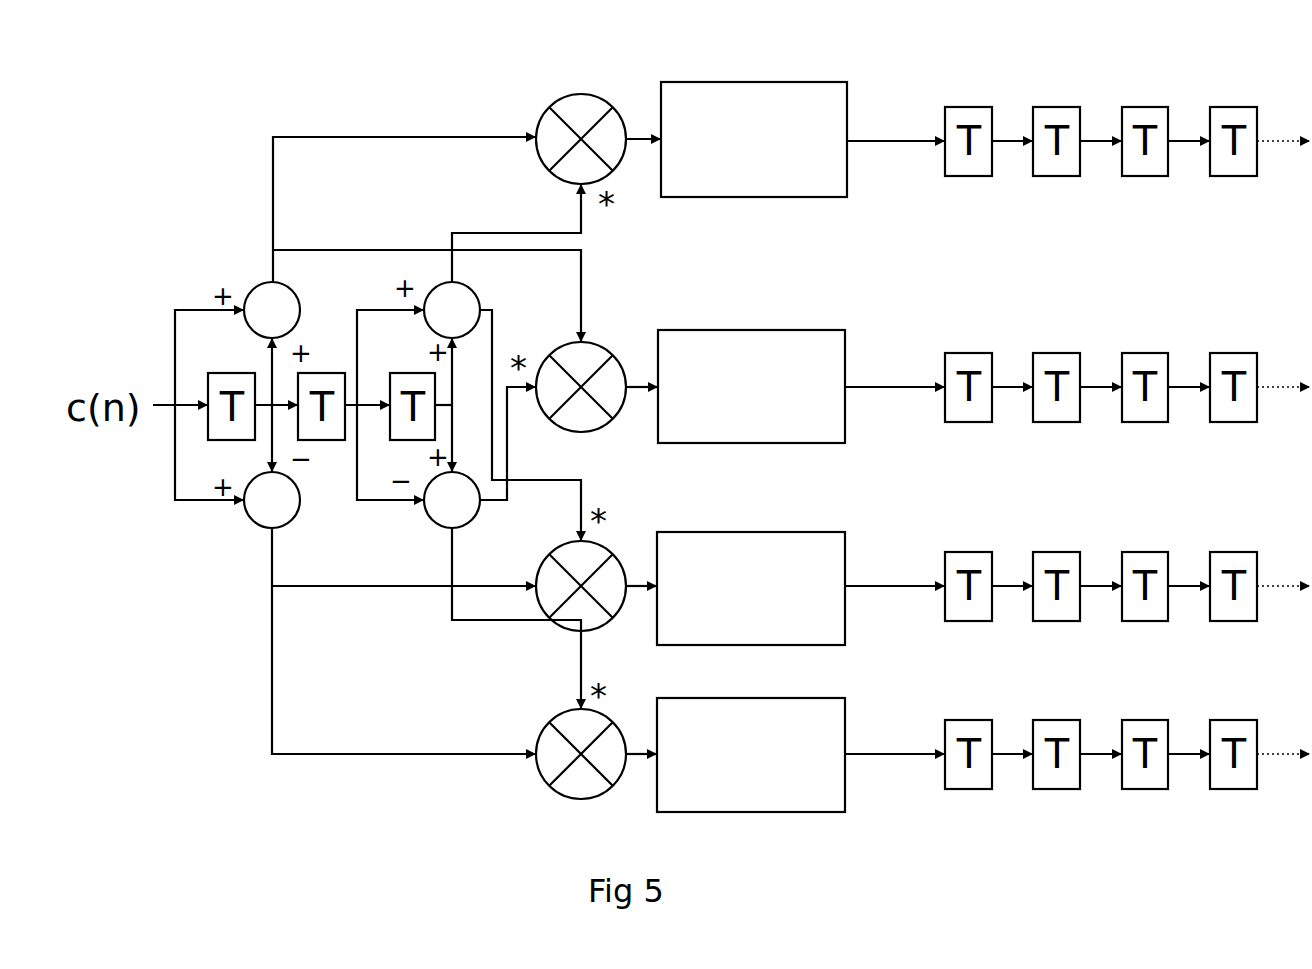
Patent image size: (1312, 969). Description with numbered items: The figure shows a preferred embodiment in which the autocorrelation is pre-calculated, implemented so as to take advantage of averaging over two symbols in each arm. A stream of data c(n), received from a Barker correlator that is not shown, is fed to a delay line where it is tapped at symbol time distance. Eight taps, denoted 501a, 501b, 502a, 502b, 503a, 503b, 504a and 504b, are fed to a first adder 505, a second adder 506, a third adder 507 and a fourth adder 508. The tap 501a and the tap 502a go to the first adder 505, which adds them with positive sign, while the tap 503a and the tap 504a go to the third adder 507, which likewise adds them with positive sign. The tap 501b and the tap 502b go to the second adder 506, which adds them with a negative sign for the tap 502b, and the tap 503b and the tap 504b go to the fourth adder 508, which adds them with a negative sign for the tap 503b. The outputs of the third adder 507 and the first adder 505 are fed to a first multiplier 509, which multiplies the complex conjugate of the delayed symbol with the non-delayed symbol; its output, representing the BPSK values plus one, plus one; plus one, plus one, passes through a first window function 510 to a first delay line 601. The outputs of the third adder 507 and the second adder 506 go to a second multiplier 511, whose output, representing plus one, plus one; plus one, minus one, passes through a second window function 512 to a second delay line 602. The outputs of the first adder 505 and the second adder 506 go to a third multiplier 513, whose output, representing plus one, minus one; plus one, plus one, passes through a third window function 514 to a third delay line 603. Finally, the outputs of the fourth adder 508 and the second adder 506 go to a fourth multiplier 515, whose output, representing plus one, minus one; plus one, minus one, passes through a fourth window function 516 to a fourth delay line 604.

The tap 501a is at (493, 313).
The tap 501b is at (452, 423).
The tap 502a is at (357, 355).
The tap 502b is at (357, 480).
The tap 503a is at (275, 383).
The tap 503b is at (255, 440).
The tap 504a is at (175, 380).
The tap 504b is at (175, 445).
The first adder 505 is at (473, 298).
The second adder 506 is at (435, 528).
The third adder 507 is at (258, 285).
The fourth adder 508 is at (253, 527).
The first multiplier 509 is at (566, 96).
The first window function 510 is at (753, 82).
The second multiplier 511 is at (608, 351).
The second window function 512 is at (763, 330).
The third multiplier 513 is at (608, 550).
The third window function 514 is at (763, 532).
The fourth multiplier 515 is at (558, 708).
The fourth window function 516 is at (748, 698).
The first delay line 601 is at (900, 141).
The second delay line 602 is at (897, 387).
The third delay line 603 is at (913, 586).
The fourth delay line 604 is at (890, 754).